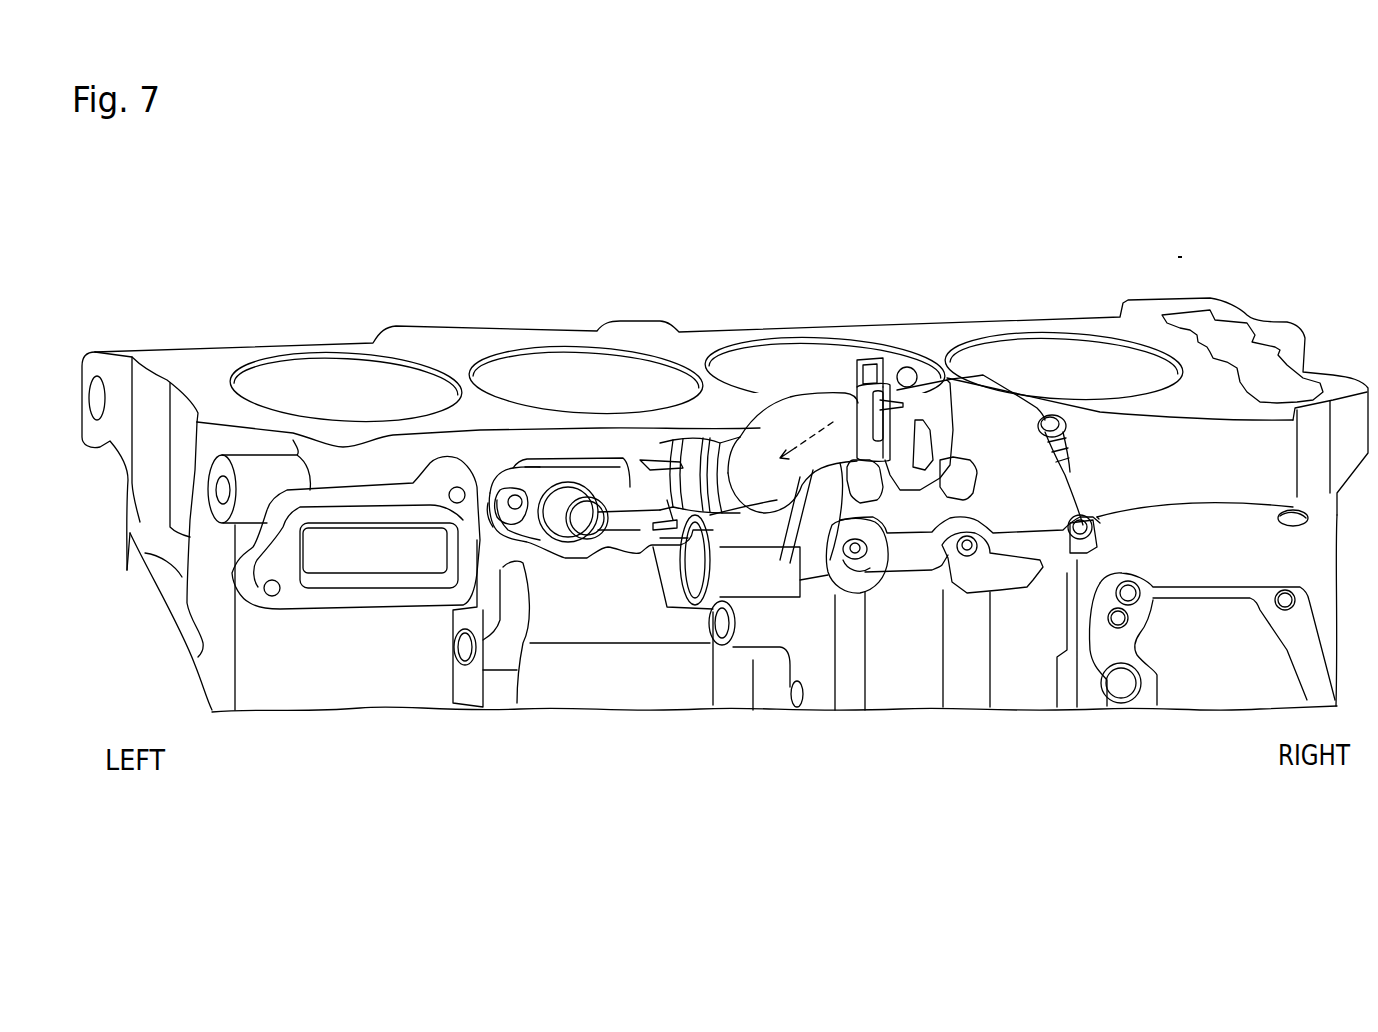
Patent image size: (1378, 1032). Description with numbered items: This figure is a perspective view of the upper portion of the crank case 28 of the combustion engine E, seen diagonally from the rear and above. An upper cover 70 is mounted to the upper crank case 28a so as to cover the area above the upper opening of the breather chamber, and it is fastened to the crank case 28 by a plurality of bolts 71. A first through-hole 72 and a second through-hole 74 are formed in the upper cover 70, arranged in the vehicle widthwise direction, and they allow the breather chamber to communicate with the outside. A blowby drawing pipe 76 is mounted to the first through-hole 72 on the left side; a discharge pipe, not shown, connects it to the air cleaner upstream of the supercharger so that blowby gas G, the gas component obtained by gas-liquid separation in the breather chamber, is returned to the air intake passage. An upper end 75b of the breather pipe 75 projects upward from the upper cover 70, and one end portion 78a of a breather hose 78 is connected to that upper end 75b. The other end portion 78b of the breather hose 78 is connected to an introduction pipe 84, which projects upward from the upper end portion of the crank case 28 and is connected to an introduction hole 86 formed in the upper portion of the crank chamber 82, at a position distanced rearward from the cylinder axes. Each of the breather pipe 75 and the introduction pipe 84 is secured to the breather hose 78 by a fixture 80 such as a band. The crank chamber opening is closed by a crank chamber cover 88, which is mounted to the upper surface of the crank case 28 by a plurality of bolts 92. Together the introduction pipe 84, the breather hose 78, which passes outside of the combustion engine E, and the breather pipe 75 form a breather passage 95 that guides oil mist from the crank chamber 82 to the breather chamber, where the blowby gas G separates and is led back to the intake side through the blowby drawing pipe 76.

The combustion engine E is at (203, 307).
The upper crank case 28a is at (140, 518).
The crank case 28 is at (122, 588).
The upper cover 70 is at (560, 503).
The bolts 71 is at (507, 522).
The first through-hole 72 is at (567, 545).
The second through-hole 74 is at (690, 440).
The breather pipe 75 is at (757, 408).
The upper end of the breather pipe 75b is at (725, 540).
The blowby drawing pipe 76 is at (517, 495).
The breather hose 78 is at (822, 378).
The one end portion of the breather hose 78a is at (772, 472).
The other end portion of the breather hose 78b is at (862, 360).
The fixture 80 is at (660, 450).
The crank chamber 82 is at (972, 677).
The introduction pipe 84 is at (1050, 419).
The introduction hole 86 is at (1000, 437).
The crank chamber cover 88 is at (1050, 495).
The bolts 92 is at (950, 570).
The breather passage 95 is at (912, 347).
The blowby gas G is at (629, 580).